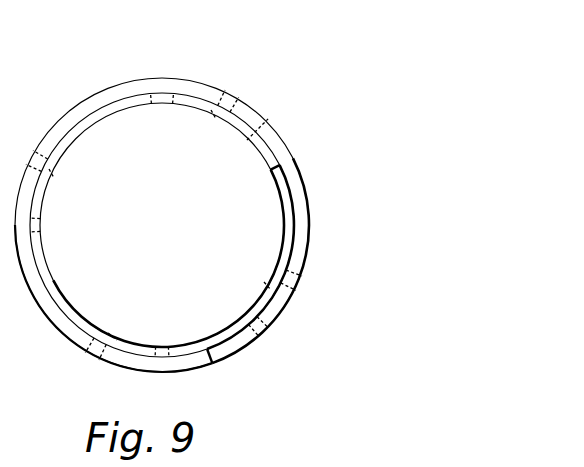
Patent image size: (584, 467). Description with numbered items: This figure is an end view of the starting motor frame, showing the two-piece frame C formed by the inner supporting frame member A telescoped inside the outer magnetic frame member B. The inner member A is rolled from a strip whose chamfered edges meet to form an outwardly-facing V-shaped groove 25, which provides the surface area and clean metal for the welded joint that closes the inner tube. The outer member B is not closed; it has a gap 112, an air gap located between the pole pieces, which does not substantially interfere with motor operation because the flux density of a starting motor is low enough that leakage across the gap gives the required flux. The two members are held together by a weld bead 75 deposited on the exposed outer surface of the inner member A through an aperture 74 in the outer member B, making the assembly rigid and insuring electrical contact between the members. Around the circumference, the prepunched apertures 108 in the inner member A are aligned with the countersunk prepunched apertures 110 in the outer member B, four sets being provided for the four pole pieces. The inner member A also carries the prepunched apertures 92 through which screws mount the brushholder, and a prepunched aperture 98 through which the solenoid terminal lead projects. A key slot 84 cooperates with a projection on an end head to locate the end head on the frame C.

The V-shaped groove 25 is at (55, 302).
The aperture 74 is at (257, 340).
The weld bead 75 is at (268, 321).
The key slot 84 is at (276, 171).
The prepunched apertures 92 is at (268, 112).
The prepunched aperture 98 is at (160, 104).
The prepunched apertures 108 is at (214, 118).
The prepunched apertures 110 is at (224, 86).
The gap 112 is at (212, 356).
The inner supporting frame member A is at (78, 132).
The outer magnetic frame member B is at (93, 102).
The two-piece frame C is at (110, 81).